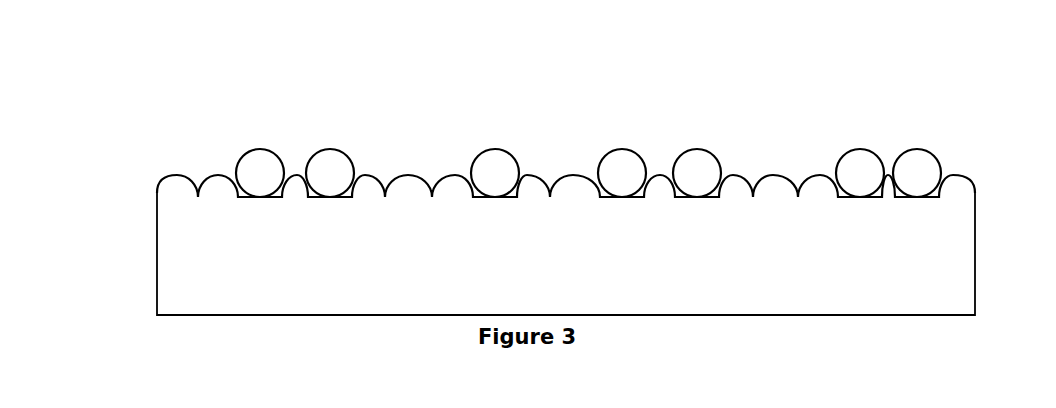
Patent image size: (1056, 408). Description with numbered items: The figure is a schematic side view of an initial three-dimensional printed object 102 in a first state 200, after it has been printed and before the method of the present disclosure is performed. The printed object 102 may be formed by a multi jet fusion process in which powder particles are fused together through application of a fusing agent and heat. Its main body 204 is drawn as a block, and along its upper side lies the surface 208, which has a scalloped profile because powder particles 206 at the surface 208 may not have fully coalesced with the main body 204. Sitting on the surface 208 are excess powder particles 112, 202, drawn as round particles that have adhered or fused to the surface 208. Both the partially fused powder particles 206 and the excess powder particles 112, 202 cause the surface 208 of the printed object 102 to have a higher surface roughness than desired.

The 3D printed object 102 is at (140, 76).
The first state 200 is at (283, 84).
The excess powder particles 202 is at (263, 150).
The excess powder particle 112 is at (622, 150).
The main body 204 is at (168, 277).
The powder particles 206 is at (965, 172).
The surface 208 is at (467, 207).